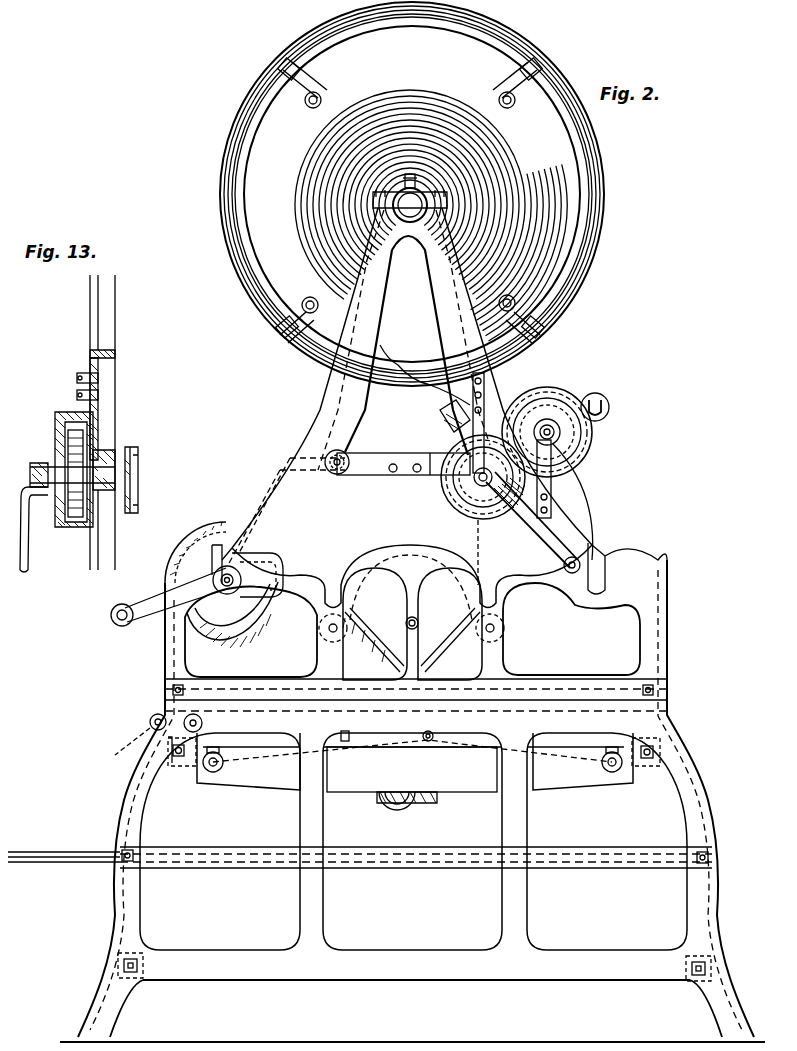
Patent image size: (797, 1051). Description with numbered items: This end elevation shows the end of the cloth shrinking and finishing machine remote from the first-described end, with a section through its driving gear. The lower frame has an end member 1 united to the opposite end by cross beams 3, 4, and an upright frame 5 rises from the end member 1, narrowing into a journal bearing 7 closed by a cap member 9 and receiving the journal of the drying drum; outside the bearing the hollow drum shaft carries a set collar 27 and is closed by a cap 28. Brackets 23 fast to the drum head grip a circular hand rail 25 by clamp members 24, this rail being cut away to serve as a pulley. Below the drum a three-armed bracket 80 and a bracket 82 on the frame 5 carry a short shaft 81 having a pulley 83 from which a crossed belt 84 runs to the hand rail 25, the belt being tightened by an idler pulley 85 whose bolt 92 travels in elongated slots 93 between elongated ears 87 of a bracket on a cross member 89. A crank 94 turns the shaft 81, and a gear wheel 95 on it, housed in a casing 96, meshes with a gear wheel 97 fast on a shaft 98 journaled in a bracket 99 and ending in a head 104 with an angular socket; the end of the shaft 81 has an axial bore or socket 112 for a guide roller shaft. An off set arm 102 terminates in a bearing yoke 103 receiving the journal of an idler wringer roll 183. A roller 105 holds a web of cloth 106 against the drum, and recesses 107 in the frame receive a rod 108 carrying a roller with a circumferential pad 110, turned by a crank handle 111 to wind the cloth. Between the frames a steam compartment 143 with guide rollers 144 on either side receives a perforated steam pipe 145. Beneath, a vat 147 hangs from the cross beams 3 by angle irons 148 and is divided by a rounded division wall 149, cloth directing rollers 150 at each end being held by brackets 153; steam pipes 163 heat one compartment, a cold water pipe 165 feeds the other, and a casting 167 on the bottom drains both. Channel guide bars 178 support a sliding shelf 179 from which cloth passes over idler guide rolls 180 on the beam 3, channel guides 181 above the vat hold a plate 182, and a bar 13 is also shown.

In FIG. 2, the end member 1 is at (126, 805).
In FIG. 2, the cross beam 3 is at (410, 730).
In FIG. 2, the cross beam 4 is at (140, 964).
In FIG. 2, the frame 5 is at (284, 461).
In FIG. 13, the frame 5 is at (116, 320).
In FIG. 2, the journal bearing 7 is at (414, 222).
In FIG. 2, the cap member 9 is at (416, 182).
In FIG. 2, the bar 13 is at (485, 465).
In FIG. 2, the bracket 23 is at (503, 86).
In FIG. 2, the clamp member 24 is at (545, 70).
In FIG. 2, the hand rail 25 is at (596, 280).
In FIG. 2, the set collar 27 is at (392, 210).
In FIG. 2, the cap 28 is at (422, 208).
In FIG. 2, the bracket 80 is at (470, 484).
In FIG. 13, the bracket 80 is at (58, 414).
In FIG. 2, the short shaft 81 is at (472, 506).
In FIG. 13, the short shaft 81 is at (52, 467).
In FIG. 13, the bracket 82 is at (108, 522).
In FIG. 13, the pulley 83 is at (132, 446).
In FIG. 2, the belt 84 is at (530, 390).
In FIG. 2, the idler pulley 85 is at (440, 416).
In FIG. 2, the elongated ear 87 is at (455, 408).
In FIG. 2, the cross member 89 is at (366, 450).
In FIG. 2, the bolt 92 is at (440, 430).
In FIG. 2, the elongated slot 93 is at (452, 420).
In FIG. 2, the crank 94 is at (563, 568).
In FIG. 13, the crank 94 is at (30, 565).
In FIG. 2, the gear wheel 95 is at (484, 520).
In FIG. 13, the gear wheel 95 is at (75, 518).
In FIG. 2, the casing 96 is at (416, 514).
In FIG. 13, the casing 96 is at (64, 508).
In FIG. 2, the gear wheel 97 is at (560, 455).
In FIG. 2, the shaft 98 is at (560, 436).
In FIG. 2, the bracket 99 is at (578, 493).
In FIG. 2, the off set arm 102 is at (603, 419).
In FIG. 2, the bearing yoke 103 is at (609, 404).
In FIG. 2, the head 104 is at (565, 402).
In FIG. 2, the roller 105 is at (330, 474).
In FIG. 2, the web of cloth 106 is at (305, 376).
In FIG. 2, the recess 107 is at (244, 552).
In FIG. 2, the rod 108 is at (251, 632).
In FIG. 2, the circumferential pad 110 is at (212, 528).
In FIG. 2, the crank handle 111 is at (146, 620).
In FIG. 13, the axial bore or socket 112 is at (138, 478).
In FIG. 2, the steam compartment 143 is at (458, 642).
In FIG. 2, the guide roller 144 is at (322, 630).
In FIG. 2, the perforated steam pipe 145 is at (406, 618).
In FIG. 2, the vat 147 is at (484, 795).
In FIG. 2, the angle iron 148 is at (190, 785).
In FIG. 2, the division wall 149 is at (433, 760).
In FIG. 2, the cloth directing roller 150 is at (222, 772).
In FIG. 2, the bracket 153 is at (208, 735).
In FIG. 2, the steam pipe 163 is at (358, 752).
In FIG. 2, the cold water pipe 165 is at (430, 733).
In FIG. 2, the casting 167 is at (396, 808).
In FIG. 2, the channel guide bar 178 is at (428, 872).
In FIG. 2, the shelf 179 is at (100, 865).
In FIG. 2, the idler guide roll 180 is at (152, 716).
In FIG. 2, the channel guide 181 is at (571, 629).
In FIG. 2, the plate 182 is at (242, 626).
In FIG. 2, the idler wringer roll 183 is at (600, 396).